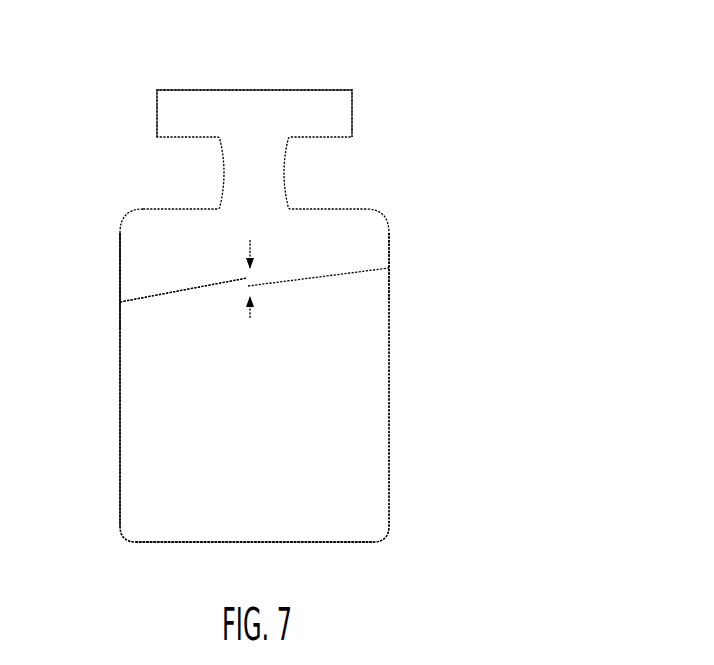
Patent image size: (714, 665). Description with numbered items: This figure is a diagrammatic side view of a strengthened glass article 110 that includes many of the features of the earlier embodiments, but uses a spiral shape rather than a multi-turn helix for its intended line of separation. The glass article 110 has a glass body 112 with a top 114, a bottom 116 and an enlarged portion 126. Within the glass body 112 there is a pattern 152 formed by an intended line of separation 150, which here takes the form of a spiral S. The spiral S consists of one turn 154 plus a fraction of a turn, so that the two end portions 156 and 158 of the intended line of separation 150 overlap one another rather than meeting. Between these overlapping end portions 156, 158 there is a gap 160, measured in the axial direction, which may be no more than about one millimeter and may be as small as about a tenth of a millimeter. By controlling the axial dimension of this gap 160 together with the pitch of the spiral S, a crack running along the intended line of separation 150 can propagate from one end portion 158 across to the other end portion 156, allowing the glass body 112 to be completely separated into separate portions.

The glass article 110 is at (420, 185).
The glass body 112 is at (402, 425).
The top 114 is at (295, 72).
The bottom 116 is at (170, 552).
The enlarged portion 126 is at (118, 443).
The intended line of separation 150 is at (180, 290).
The pattern 152 is at (112, 303).
The turn 154 is at (403, 265).
The end portion 156 is at (247, 278).
The end portion 158 is at (257, 296).
The gap 160 is at (253, 318).
The spiral S is at (168, 283).